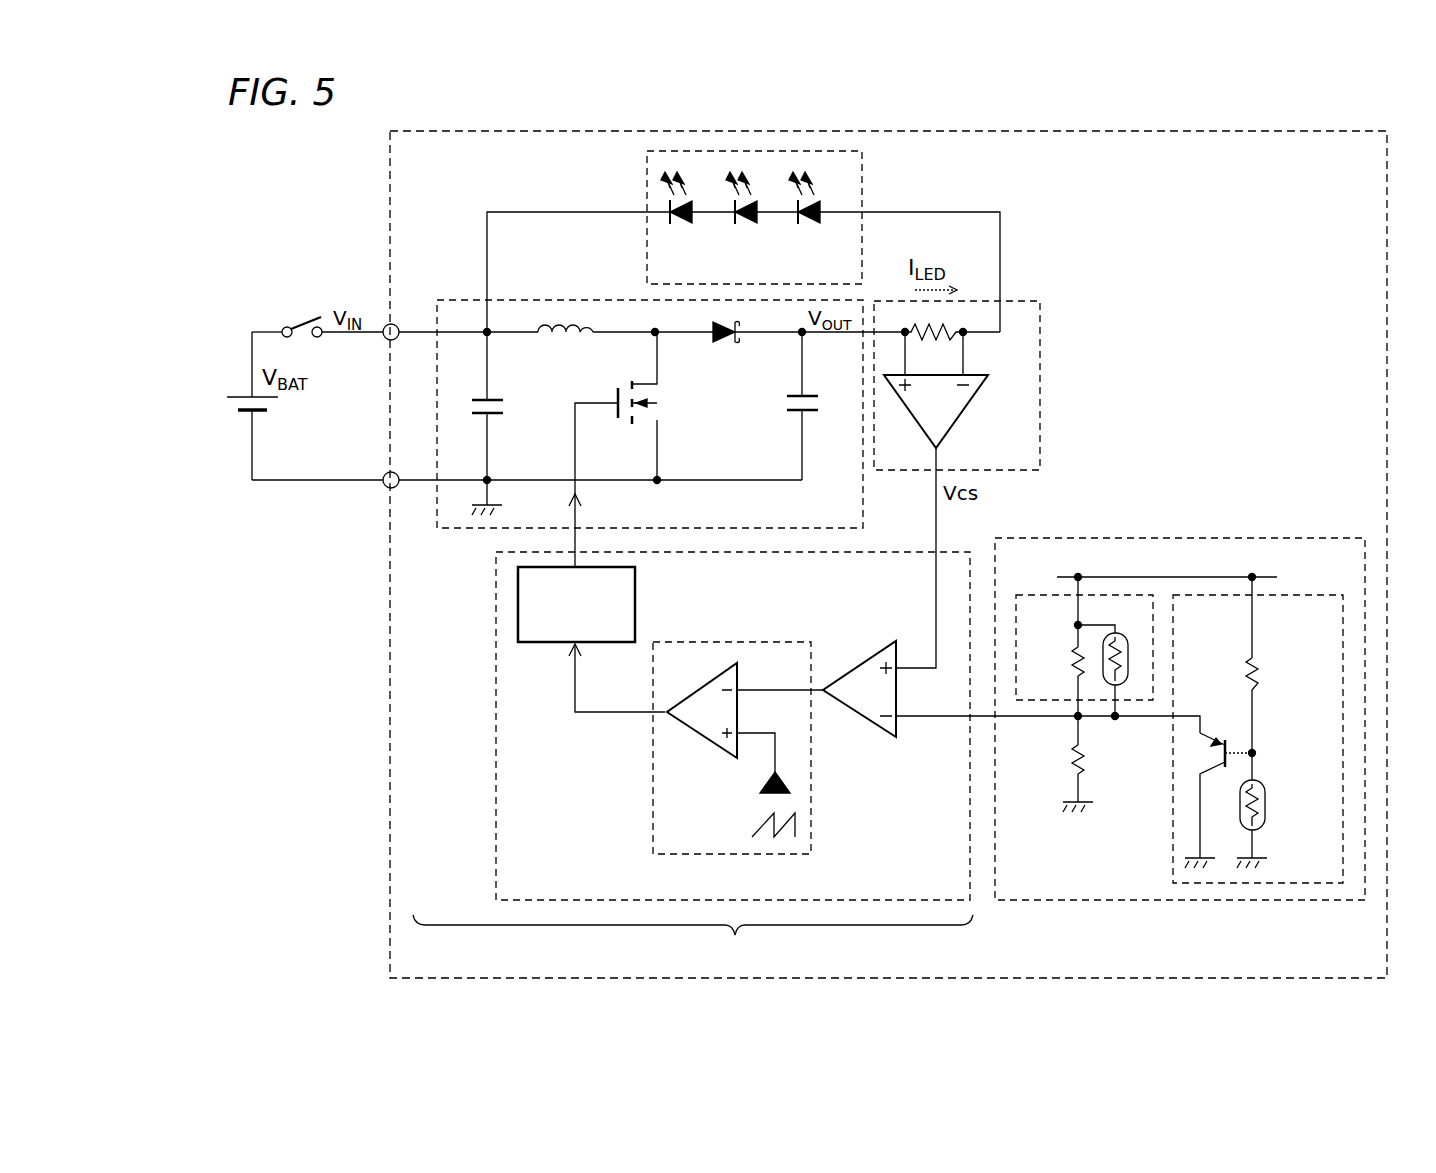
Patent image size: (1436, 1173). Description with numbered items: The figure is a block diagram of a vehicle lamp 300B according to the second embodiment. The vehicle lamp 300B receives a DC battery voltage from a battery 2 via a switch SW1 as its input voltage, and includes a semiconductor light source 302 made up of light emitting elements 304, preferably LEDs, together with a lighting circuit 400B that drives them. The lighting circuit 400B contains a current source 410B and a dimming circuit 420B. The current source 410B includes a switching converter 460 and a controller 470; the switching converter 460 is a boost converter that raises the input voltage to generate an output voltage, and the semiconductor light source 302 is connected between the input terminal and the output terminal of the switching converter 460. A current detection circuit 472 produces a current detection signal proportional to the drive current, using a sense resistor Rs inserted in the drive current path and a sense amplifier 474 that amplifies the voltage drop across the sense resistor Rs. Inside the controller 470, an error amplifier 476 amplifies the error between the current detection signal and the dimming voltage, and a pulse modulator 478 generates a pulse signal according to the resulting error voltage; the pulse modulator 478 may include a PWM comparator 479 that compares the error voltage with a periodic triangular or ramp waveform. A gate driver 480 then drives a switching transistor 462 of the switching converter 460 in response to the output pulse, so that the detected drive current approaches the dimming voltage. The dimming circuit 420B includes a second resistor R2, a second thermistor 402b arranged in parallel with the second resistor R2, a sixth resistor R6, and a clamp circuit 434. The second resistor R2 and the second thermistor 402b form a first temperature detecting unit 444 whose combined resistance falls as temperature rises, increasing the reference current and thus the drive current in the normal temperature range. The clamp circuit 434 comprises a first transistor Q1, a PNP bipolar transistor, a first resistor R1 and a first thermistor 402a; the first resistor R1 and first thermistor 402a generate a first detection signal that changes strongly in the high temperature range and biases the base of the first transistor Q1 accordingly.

The battery 2 is at (228, 412).
The vehicle lamp 300B is at (1168, 110).
The semiconductor light source 302 is at (743, 238).
The light emitting element 304 is at (756, 226).
The lighting circuit 400B is at (1234, 298).
The current source 410B is at (693, 944).
The dimming circuit 420B is at (1180, 692).
The clamp circuit 434 is at (1259, 715).
The first temperature detecting unit 444 is at (1081, 662).
The switching converter 460 is at (652, 404).
The switching transistor 462 is at (660, 400).
The controller 470 is at (803, 726).
The current detection circuit 472 is at (1000, 373).
The sense amplifier 474 is at (960, 412).
The error amplifier 476 is at (866, 720).
The pulse modulator 478 is at (738, 723).
The PWM comparator 479 is at (706, 742).
The gate driver 480 is at (635, 606).
The first thermistor 402a is at (1290, 805).
The second thermistor 402b is at (1122, 690).
The switch SW1 is at (290, 318).
The first transistor Q1 is at (1213, 738).
The first resistor R1 is at (1270, 677).
The second resistor R2 is at (1058, 663).
The sixth resistor R6 is at (1058, 761).
The sense resistor Rs is at (934, 343).